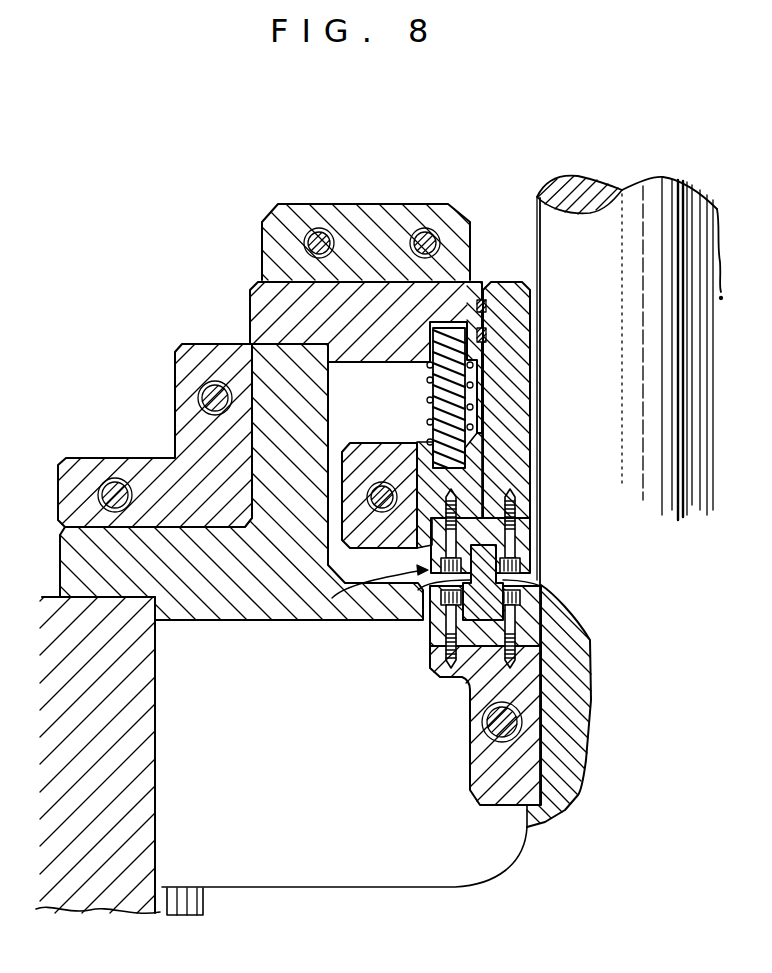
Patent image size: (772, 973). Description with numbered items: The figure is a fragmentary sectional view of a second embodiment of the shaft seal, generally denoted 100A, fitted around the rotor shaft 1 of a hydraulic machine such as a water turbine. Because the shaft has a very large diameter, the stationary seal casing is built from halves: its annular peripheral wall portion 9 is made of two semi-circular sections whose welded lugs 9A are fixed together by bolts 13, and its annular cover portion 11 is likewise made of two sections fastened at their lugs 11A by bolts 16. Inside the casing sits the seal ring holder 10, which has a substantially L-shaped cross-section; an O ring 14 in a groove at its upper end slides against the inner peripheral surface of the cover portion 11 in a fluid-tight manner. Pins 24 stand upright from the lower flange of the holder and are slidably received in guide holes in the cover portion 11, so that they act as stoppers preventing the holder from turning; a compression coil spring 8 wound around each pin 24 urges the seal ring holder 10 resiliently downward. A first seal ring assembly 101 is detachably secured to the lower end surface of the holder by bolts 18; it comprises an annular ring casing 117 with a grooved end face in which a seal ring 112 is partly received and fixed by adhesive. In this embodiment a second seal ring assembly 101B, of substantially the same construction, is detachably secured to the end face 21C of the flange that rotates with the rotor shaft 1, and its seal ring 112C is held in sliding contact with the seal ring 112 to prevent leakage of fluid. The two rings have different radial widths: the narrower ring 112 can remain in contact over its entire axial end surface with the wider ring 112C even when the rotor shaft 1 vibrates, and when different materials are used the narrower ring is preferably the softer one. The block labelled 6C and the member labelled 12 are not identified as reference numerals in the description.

The shaft seal 100A is at (212, 226).
The rotor shaft 1 is at (540, 217).
The housing block 6C is at (479, 769).
The compression coil spring 8 is at (486, 402).
The peripheral wall portion 9 is at (89, 558).
The lug 9A is at (221, 358).
The seal ring holder 10 is at (500, 283).
The cover portion 11 is at (266, 303).
The lug 11A is at (373, 216).
The wall member 12 is at (140, 733).
The bolt 13 is at (198, 396).
The O ring 14 is at (488, 313).
The bolt 16 is at (327, 229).
The bolt 18 is at (411, 589).
The end face 21C is at (541, 628).
The pin 24 is at (446, 379).
The first seal ring assembly 101 is at (376, 592).
The second seal ring assembly 101B is at (459, 672).
The seal ring 112 is at (423, 639).
The seal ring 112C is at (541, 582).
The ring casing 117 is at (350, 586).